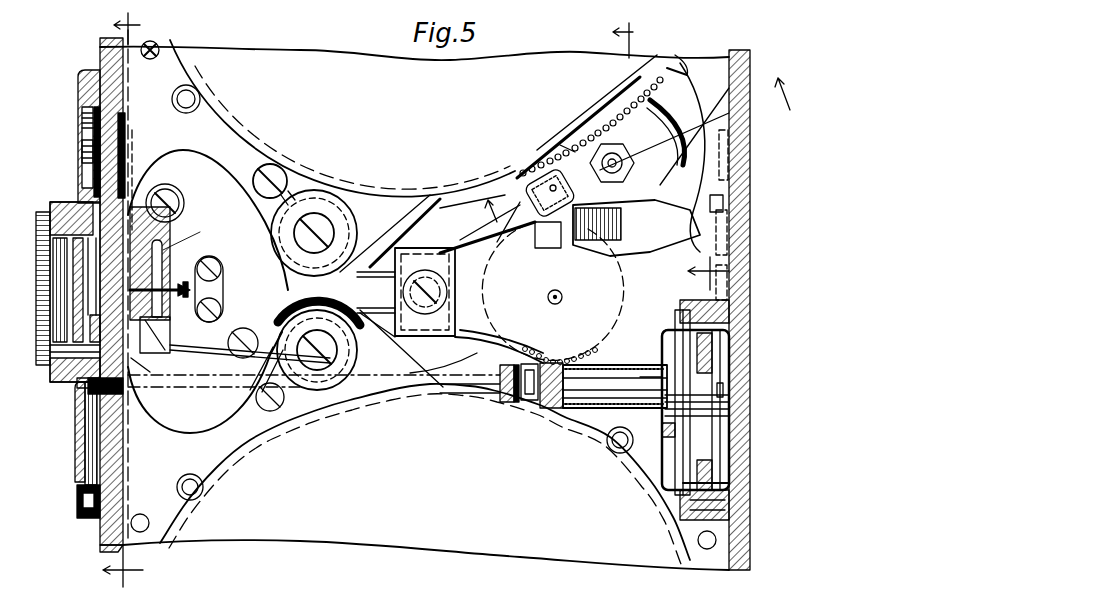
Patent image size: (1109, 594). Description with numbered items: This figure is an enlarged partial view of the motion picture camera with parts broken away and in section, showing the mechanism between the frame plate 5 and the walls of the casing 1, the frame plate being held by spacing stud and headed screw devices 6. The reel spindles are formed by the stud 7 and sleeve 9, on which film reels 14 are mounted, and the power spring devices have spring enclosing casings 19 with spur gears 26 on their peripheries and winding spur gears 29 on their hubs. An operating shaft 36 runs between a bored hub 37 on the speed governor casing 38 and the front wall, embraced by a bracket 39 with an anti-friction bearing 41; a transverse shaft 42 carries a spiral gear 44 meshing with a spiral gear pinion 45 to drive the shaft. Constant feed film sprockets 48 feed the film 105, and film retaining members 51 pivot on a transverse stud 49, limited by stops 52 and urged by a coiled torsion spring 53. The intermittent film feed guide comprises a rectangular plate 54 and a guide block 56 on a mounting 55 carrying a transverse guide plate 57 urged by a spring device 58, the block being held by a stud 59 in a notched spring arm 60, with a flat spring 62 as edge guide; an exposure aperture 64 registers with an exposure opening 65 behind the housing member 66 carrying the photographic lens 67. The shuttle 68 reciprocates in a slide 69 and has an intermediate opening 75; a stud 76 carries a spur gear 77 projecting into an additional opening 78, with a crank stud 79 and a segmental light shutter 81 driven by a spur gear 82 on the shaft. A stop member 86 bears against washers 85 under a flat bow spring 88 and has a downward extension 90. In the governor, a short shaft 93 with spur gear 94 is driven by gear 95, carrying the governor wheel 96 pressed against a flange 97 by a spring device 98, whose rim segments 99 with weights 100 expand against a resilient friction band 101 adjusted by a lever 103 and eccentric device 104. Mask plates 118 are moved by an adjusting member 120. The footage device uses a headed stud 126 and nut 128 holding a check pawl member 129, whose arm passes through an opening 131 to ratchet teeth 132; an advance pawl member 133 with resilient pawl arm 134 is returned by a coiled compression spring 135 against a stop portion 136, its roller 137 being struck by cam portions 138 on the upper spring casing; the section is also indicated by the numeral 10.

The casing 1 is at (750, 240).
The frame plate 5 is at (173, 48).
The spacing stud and headed screw devices 6 is at (118, 48).
The stud 7 is at (123, 302).
The sleeve 9 is at (641, 157).
The section line 10 is at (671, 158).
The film reel 14 is at (292, 63).
The spring enclosing casing 19 is at (543, 160).
The spur gears 26 is at (643, 87).
The spur gears 29 is at (515, 182).
The operating shaft 36 is at (490, 405).
The bored hub 37 is at (597, 423).
The speed governor casing 38 is at (677, 510).
The bracket 39 is at (500, 407).
The anti-friction bearing 41 is at (510, 400).
The transverse shaft 42 is at (560, 300).
The spiral gear 44 is at (597, 352).
The spiral gear pinion 45 is at (547, 423).
The constant feed film sprockets 48 is at (340, 198).
The transverse stud 49 is at (430, 273).
The film retaining members 51 is at (388, 210).
The stops 52 is at (537, 253).
The coiled torsion spring 53 is at (385, 283).
The rectangular plate 54 is at (130, 150).
The mounting 55 is at (171, 203).
The guide block 56 is at (192, 236).
The transverse guide plate 57 is at (157, 262).
The spring device 58 is at (223, 280).
The stud 59 is at (208, 331).
The notched spring arm 60 is at (222, 332).
The flat spring 62 is at (223, 293).
The exposure aperture 64 is at (165, 352).
The exposure opening 65 is at (153, 277).
The housing member 66 is at (80, 90).
The photographic lens 67 is at (40, 212).
The intermittent film feed shuttle 68 is at (150, 172).
The slide 69 is at (130, 140).
The intermediate opening 75 is at (200, 365).
The stud 76 is at (80, 382).
The spur gear 77 is at (147, 367).
The additional opening 78 is at (125, 422).
The crank stud 79 is at (75, 435).
The segmental light shutter 81 is at (77, 452).
The spur gear 82 is at (123, 437).
The washers 85 is at (123, 477).
The stop member 86 is at (80, 485).
The flat bow spring 88 is at (122, 455).
The downward extension 90 is at (97, 527).
The short shaft 93 is at (713, 407).
The spur gear 94 is at (729, 455).
The gear 95 is at (667, 330).
The governor wheel 96 is at (722, 372).
The flange 97 is at (750, 413).
The spring device 98 is at (690, 436).
The rim segments 99 is at (729, 325).
The weights 100 is at (725, 477).
The resilient friction band 101 is at (730, 510).
The lever 103 is at (737, 280).
The eccentric device 104 is at (753, 158).
The film 105 is at (225, 170).
The mask plates 118 is at (80, 125).
The adjusting member 120 is at (80, 152).
The headed stud 126 is at (623, 133).
The nut 128 is at (603, 147).
The check pawl member 129 is at (740, 200).
The opening 131 is at (700, 75).
The ratchet teeth 132 is at (697, 80).
The advance pawl member 133 is at (727, 135).
The resilient pawl arm 134 is at (753, 72).
The coiled compression spring 135 is at (583, 240).
The stop portion 136 is at (612, 250).
The roller 137 is at (550, 157).
The cam portions 138 is at (560, 145).